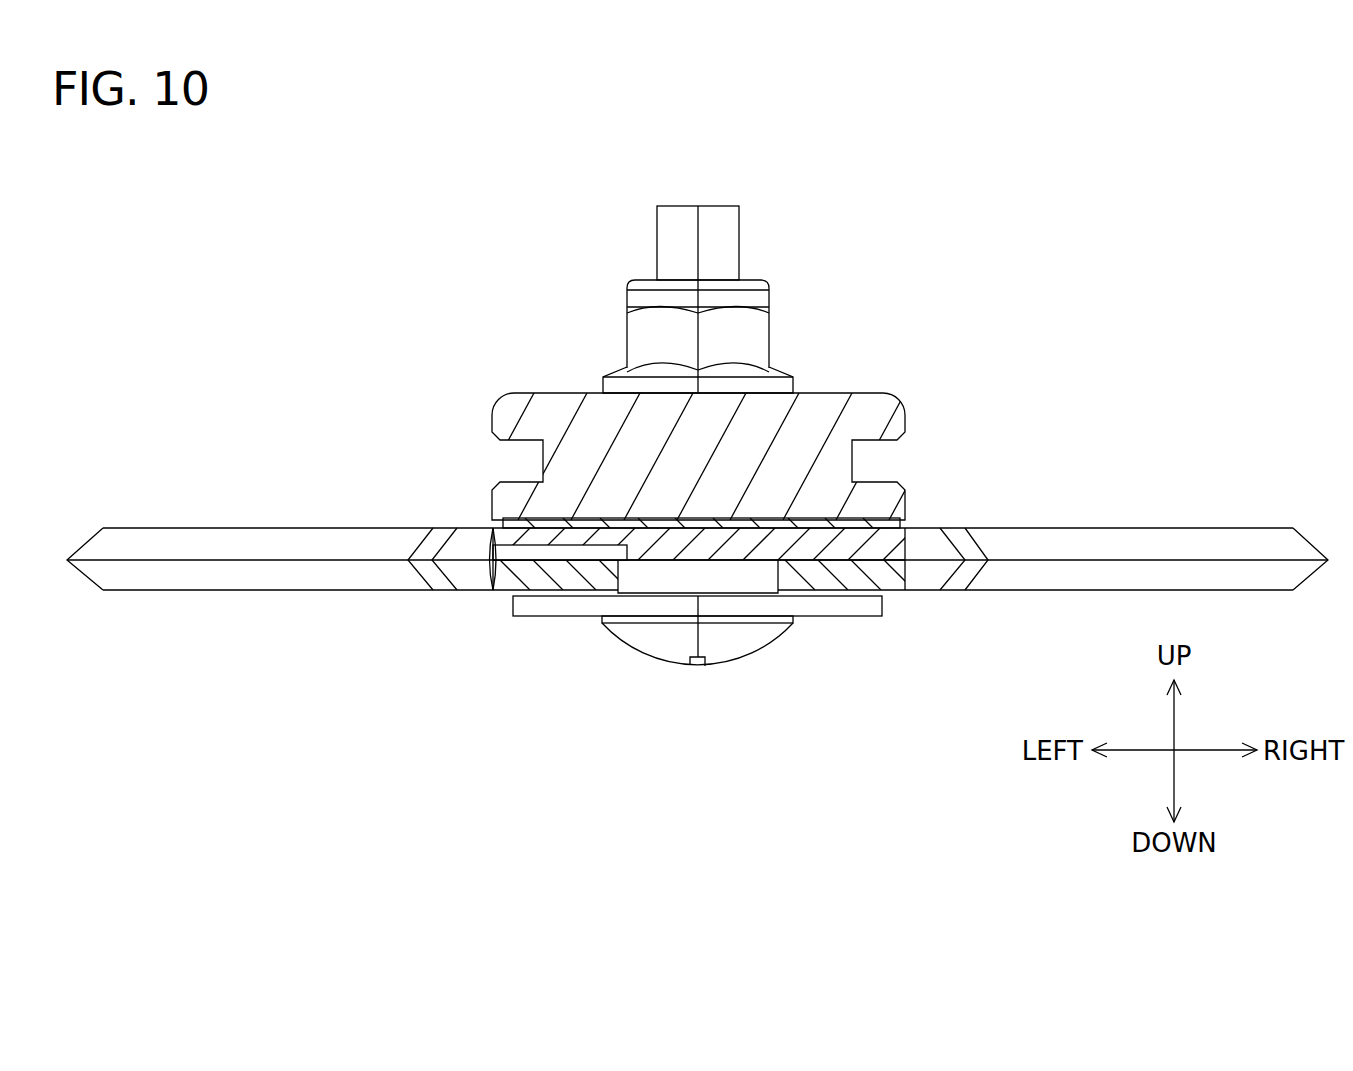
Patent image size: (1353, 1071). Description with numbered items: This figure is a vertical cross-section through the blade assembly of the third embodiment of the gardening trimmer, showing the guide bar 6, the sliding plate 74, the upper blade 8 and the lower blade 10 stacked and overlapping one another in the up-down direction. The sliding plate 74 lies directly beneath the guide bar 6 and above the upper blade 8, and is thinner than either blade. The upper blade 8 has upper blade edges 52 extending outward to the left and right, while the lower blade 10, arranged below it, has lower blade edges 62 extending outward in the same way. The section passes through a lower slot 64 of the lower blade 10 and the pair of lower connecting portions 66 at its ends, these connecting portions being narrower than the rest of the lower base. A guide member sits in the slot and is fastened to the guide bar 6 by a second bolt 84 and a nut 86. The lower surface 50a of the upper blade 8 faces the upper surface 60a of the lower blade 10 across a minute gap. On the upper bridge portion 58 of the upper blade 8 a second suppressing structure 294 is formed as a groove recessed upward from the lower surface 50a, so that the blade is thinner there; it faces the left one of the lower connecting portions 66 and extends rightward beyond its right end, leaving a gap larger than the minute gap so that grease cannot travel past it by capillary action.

The guide bar 6 is at (897, 424).
The upper blade 8 is at (900, 540).
The lower blade 10 is at (900, 577).
The upper blade edges 52 is at (133, 535).
The lower blade edges 62 is at (133, 585).
The lower slots 64 is at (763, 595).
The lower connecting portions 66 is at (515, 600).
The sliding plate 74 is at (880, 524).
The second bolts 84 is at (665, 652).
The nuts 86 is at (633, 298).
The second suppressing structure 294 is at (530, 552).
The lower surface of the upper blade 50a is at (650, 548).
The upper bridge portion 58 is at (811, 545).
The upper surface of the lower blade 60a is at (551, 566).